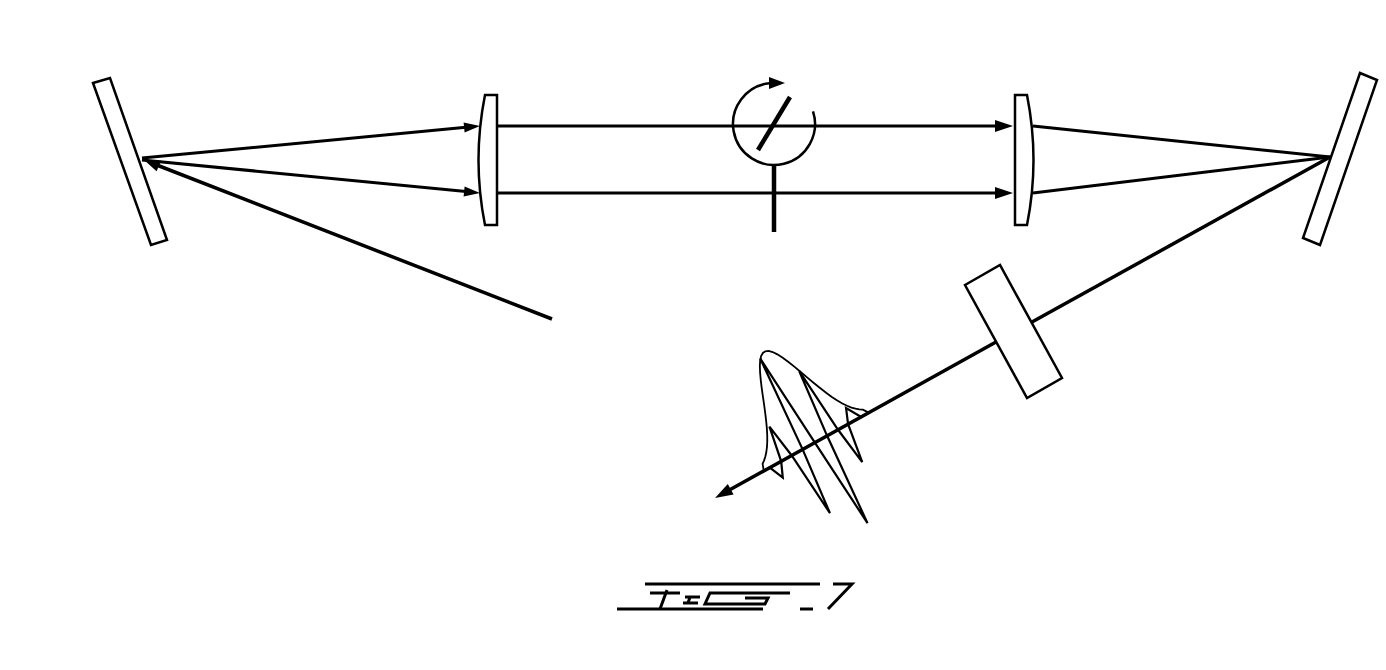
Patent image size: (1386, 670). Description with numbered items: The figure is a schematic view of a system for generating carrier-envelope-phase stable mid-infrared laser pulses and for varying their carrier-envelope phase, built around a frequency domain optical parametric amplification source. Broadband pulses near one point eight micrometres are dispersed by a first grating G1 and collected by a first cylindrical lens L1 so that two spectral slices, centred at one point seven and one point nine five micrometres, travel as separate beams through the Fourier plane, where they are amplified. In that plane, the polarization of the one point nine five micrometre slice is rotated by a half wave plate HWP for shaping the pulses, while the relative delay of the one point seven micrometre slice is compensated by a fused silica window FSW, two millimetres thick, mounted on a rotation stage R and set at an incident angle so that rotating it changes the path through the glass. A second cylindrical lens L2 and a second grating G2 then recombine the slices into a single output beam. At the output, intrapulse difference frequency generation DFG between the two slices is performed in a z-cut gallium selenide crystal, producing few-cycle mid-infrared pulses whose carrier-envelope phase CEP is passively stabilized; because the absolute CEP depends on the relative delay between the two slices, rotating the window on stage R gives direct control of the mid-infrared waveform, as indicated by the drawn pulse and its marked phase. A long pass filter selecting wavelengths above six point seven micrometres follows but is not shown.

The grating G1 is at (127, 145).
The grating G2 is at (1342, 142).
The cylindrical lens L1 is at (492, 145).
The cylindrical lens L2 is at (1018, 144).
The fused silica window FSW is at (804, 110).
The rotation stage R is at (779, 127).
The half wave plate HWP is at (775, 216).
The difference frequency generation crystal DFG is at (1022, 349).
The carrier-envelope phase CEP is at (766, 345).